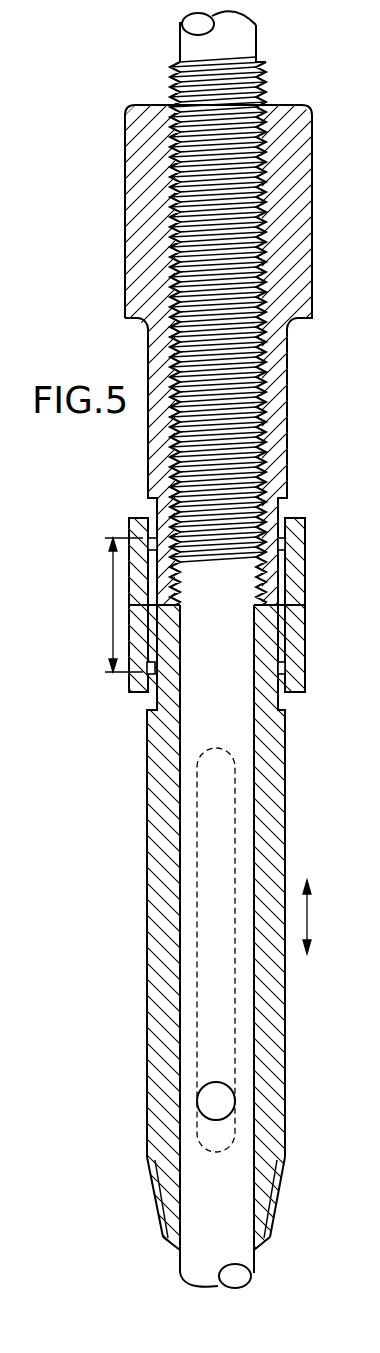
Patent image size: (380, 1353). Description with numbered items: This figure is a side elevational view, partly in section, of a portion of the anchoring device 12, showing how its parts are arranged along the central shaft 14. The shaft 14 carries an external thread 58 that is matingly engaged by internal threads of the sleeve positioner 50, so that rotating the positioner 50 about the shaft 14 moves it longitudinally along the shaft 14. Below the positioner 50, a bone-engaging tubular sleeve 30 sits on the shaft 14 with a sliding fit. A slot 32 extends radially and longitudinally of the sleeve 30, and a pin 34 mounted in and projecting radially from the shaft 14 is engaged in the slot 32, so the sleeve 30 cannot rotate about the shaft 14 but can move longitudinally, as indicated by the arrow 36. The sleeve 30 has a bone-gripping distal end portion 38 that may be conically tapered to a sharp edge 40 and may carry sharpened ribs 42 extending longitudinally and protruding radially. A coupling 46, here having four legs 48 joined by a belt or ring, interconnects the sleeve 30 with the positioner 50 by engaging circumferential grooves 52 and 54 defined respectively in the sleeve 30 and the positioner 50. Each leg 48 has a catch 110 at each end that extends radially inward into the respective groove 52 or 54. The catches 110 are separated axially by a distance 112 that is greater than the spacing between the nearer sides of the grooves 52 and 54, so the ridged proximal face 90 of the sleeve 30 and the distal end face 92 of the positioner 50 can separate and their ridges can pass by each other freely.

The anchoring device 12 is at (314, 392).
The central shaft 14 is at (180, 44).
The tubular sleeve 30 is at (287, 795).
The slot 32 is at (215, 752).
The pin 34 is at (217, 1090).
The arrow 36 is at (311, 920).
The bone-gripping distal end portion 38 is at (150, 1184).
The sharp edge 40 is at (172, 1250).
The sharpened ribs 42 is at (157, 1216).
The coupling 46 is at (306, 638).
The legs 48 is at (306, 580).
The sleeve positioner 50 is at (312, 213).
The circumferential groove 52 is at (286, 700).
The circumferential groove 54 is at (288, 503).
The external thread 58 is at (265, 68).
The proximal face 90 is at (287, 600).
The distal end face 92 is at (257, 604).
The catch 110 is at (286, 543).
The distance 112 is at (113, 606).